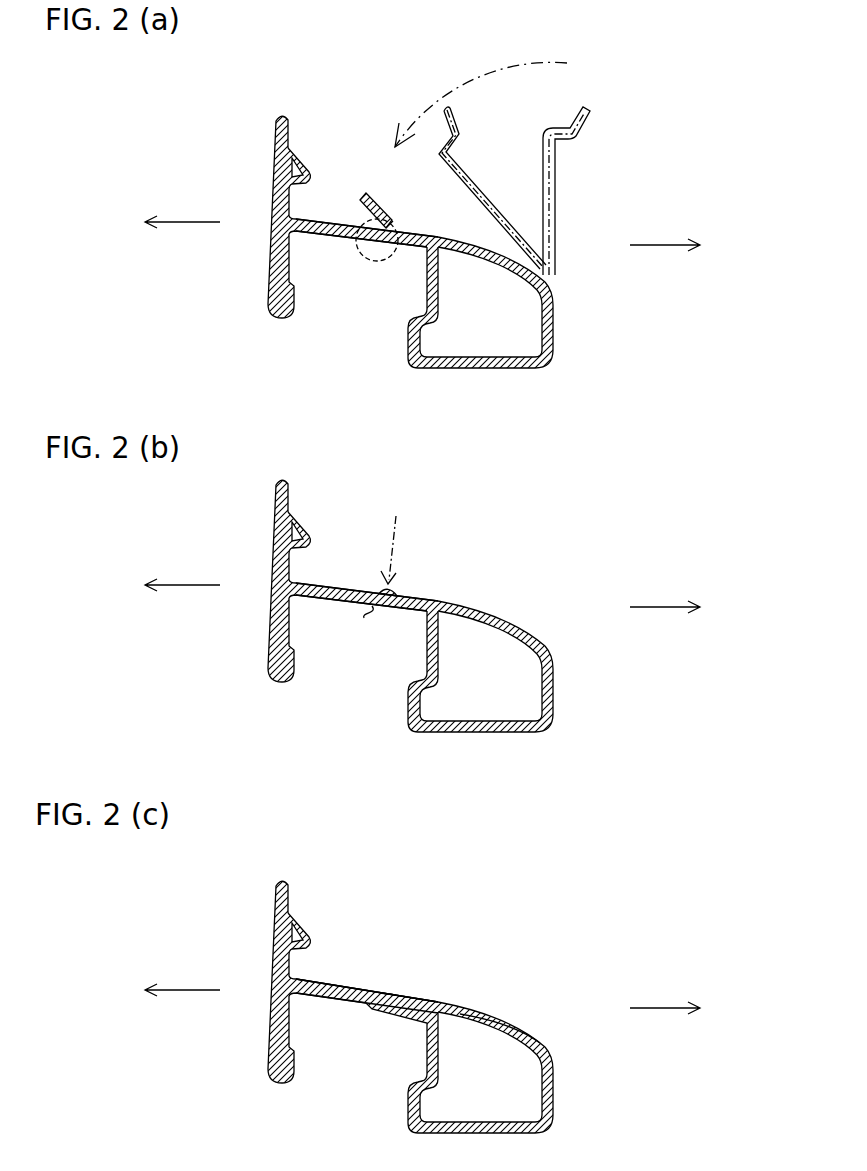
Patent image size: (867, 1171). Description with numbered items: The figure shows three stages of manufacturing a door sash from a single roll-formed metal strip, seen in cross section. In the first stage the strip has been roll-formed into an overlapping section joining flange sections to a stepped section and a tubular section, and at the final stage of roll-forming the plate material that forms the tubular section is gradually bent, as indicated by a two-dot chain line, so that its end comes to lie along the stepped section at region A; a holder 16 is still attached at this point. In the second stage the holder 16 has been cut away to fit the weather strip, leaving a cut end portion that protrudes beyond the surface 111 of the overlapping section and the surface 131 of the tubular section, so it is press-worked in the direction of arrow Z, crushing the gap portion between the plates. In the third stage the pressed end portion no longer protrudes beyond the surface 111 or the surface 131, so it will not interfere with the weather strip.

The surface of the overlapping section 111 is at (367, 950).
The surface of the tubular section 131 is at (500, 987).
The holder 16 is at (386, 208).
The region A is at (393, 227).
The arrow Z is at (392, 536).